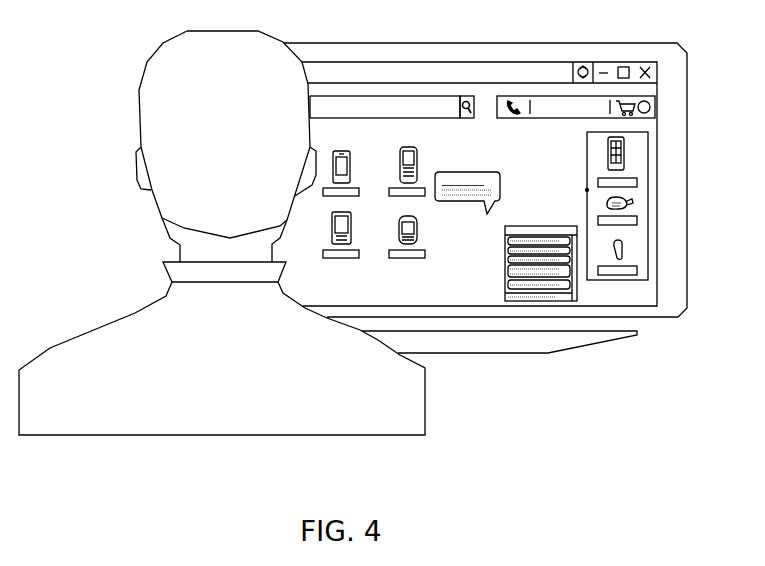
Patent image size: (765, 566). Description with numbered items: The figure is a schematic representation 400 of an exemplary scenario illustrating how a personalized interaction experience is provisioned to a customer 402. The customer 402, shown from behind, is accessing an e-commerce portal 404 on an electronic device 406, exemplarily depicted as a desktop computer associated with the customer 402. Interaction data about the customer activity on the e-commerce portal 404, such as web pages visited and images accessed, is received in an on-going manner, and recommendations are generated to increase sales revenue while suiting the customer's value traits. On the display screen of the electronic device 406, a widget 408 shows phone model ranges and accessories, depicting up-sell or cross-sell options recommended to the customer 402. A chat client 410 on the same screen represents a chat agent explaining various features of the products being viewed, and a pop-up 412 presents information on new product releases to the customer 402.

The schematic representation 400 is at (606, 457).
The customer 402 is at (118, 116).
The e-commerce portal 404 is at (353, 62).
The electronic device 406 is at (687, 172).
The widget 408 is at (585, 146).
The chat client 410 is at (553, 226).
The pop-up 412 is at (468, 172).